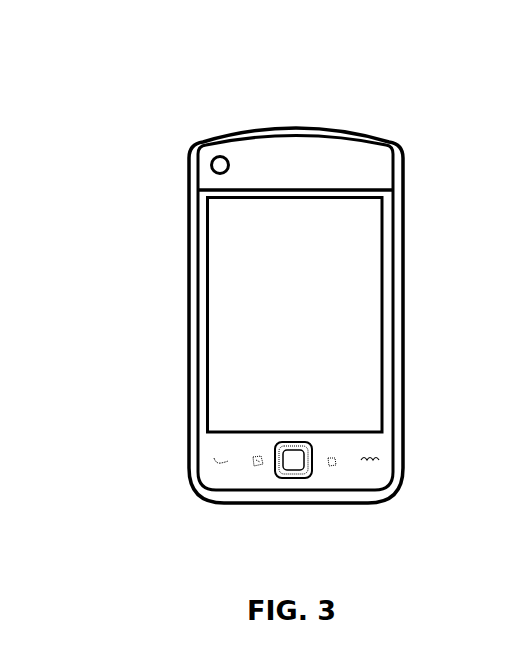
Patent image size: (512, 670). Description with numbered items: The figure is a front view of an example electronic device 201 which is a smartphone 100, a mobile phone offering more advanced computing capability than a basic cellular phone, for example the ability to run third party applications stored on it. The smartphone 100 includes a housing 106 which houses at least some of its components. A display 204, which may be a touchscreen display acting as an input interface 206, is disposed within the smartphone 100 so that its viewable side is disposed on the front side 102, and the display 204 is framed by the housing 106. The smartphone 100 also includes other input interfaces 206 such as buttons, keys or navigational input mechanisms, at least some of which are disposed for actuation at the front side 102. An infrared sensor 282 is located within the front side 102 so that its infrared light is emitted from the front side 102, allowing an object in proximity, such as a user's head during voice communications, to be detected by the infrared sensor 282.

The smartphone 100 is at (272, 90).
The electronic device 201 is at (232, 118).
The infrared sensor 282 is at (211, 165).
The housing 106 is at (403, 215).
The front side 102 is at (202, 445).
The display 204 is at (205, 272).
The input interfaces 206 is at (205, 337).